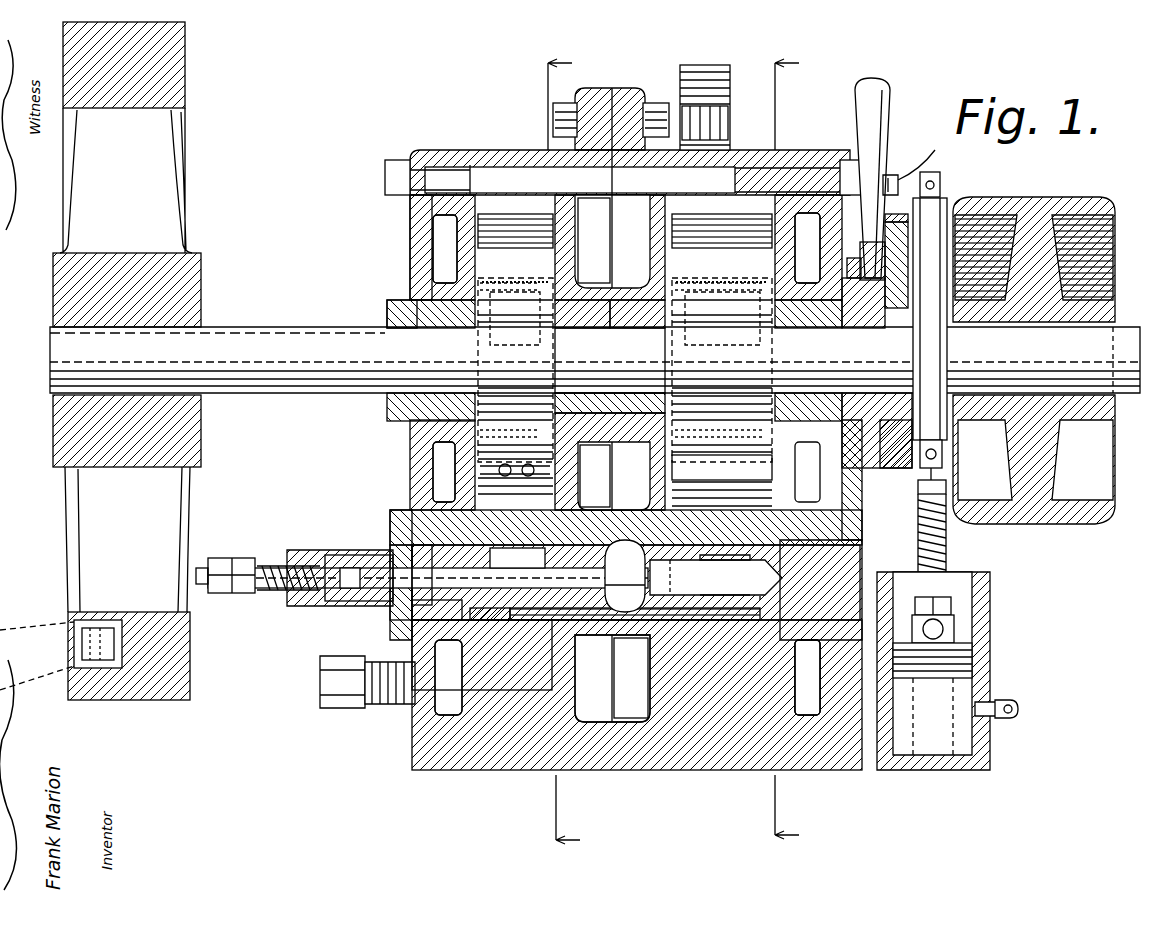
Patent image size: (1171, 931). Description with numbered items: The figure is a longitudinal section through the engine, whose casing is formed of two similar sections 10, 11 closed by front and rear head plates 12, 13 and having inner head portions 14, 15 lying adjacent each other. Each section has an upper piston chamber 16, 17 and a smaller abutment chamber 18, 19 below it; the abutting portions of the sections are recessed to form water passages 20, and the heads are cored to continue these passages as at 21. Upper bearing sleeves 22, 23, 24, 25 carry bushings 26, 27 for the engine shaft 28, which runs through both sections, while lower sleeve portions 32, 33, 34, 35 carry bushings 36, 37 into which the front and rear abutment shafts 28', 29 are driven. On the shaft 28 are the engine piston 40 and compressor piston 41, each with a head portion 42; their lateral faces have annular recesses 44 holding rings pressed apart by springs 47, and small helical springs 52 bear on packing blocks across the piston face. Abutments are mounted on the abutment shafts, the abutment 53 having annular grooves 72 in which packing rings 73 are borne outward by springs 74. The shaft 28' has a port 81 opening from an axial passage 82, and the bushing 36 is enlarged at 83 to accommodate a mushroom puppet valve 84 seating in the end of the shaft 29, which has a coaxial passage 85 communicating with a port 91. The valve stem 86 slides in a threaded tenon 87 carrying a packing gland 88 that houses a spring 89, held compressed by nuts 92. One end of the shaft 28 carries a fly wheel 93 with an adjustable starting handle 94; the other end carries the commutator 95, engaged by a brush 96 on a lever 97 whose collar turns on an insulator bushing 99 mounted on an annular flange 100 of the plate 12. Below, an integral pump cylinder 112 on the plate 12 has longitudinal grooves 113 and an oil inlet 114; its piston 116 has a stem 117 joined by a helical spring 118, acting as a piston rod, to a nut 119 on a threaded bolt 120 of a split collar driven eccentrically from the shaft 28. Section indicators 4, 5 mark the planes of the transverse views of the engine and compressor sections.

The section line 4- 4 is at (782, 456).
The section line 5- 5 is at (560, 457).
The casing section 10 is at (740, 150).
The casing section 11 is at (520, 148).
The front head plate 12 is at (806, 150).
The rear head plate 13 is at (438, 150).
The inner head portion 14 is at (650, 228).
The inner head portion 15 is at (579, 238).
The piston chamber 16 is at (680, 475).
The piston chamber 17 is at (412, 228).
The abutment chamber 18 is at (650, 700).
The abutment chamber 19 is at (465, 660).
The water passages 20 is at (644, 200).
The water passage extensions 21 is at (432, 245).
The upper bearing sleeve 22 is at (630, 296).
The upper bearing sleeve 23 is at (593, 296).
The upper bearing sleeve 24 is at (811, 274).
The upper bearing sleeve 25 is at (399, 296).
The bushing 26 is at (618, 320).
The bushing 27 is at (813, 340).
The engine shaft 28 is at (595, 342).
The abutment shaft 28' is at (844, 590).
The abutment shaft 29 is at (385, 615).
The lower sleeve portion 32 is at (638, 522).
The lower sleeve portion 33 is at (600, 522).
The lower sleeve portion 34 is at (807, 677).
The lower sleeve portion 35 is at (412, 650).
The bushing 36 is at (631, 678).
The bushing 37 is at (394, 517).
The engine piston 40 is at (722, 360).
The compressor piston 41 is at (515, 354).
The head portion 42 is at (430, 468).
The annular recess 44 is at (755, 282).
The springs 47 is at (750, 458).
The helical spring 52 is at (552, 470).
The abutment 53 is at (515, 700).
The annular grooves 72 is at (444, 475).
The packing rings 73 is at (542, 678).
The springs 74 is at (745, 782).
The port 81 is at (726, 575).
The axial passage 82 is at (716, 577).
The enlarged portion 83 is at (625, 576).
The mushroom puppet valve 84 is at (625, 595).
The coaxial passage 85 is at (415, 625).
The valve stem 86 is at (340, 570).
The threaded tenon 87 is at (370, 556).
The packing gland 88 is at (340, 608).
The spring 89 is at (272, 564).
The port 91 is at (517, 558).
The nuts 92 is at (240, 595).
The fly wheel 93 is at (178, 168).
The starting handle 94 is at (55, 625).
The commutator 95 is at (915, 480).
The brush 96 is at (910, 215).
The lever 97 is at (878, 127).
The insulator bushing 99 is at (855, 260).
The annular flange 100 is at (868, 310).
The pump cylinder 112 is at (968, 605).
The longitudinal grooves 113 is at (990, 582).
The oil inlet 114 is at (1020, 710).
The piston 116 is at (972, 656).
The stem portion 117 is at (955, 628).
The helical spring 118 is at (948, 550).
The nut 119 is at (946, 486).
The threaded bolt 120 is at (944, 470).